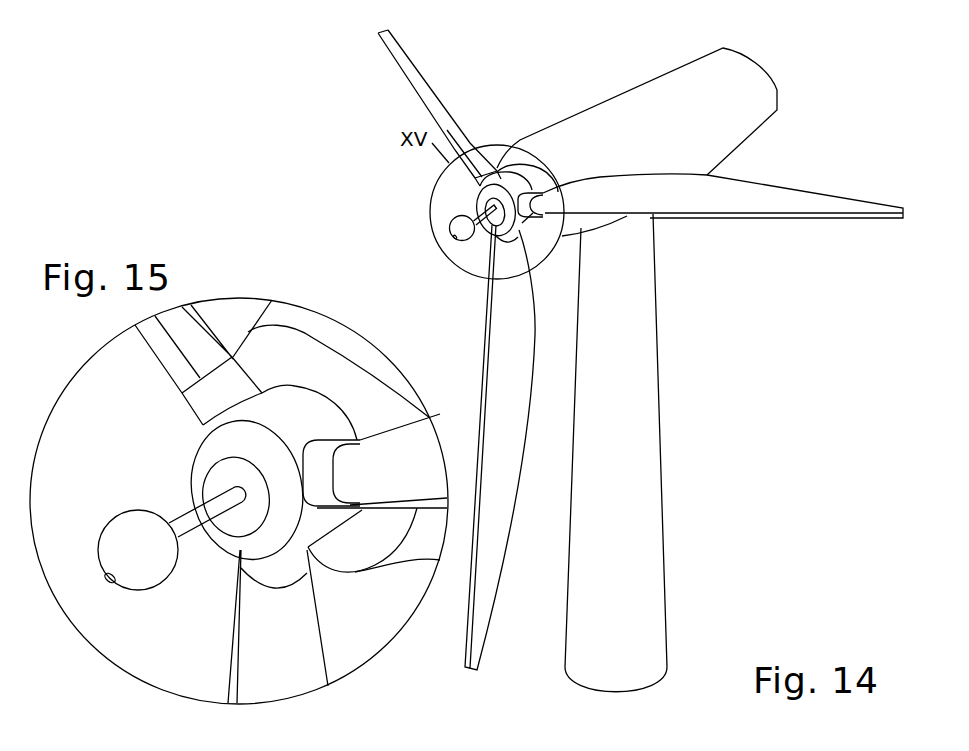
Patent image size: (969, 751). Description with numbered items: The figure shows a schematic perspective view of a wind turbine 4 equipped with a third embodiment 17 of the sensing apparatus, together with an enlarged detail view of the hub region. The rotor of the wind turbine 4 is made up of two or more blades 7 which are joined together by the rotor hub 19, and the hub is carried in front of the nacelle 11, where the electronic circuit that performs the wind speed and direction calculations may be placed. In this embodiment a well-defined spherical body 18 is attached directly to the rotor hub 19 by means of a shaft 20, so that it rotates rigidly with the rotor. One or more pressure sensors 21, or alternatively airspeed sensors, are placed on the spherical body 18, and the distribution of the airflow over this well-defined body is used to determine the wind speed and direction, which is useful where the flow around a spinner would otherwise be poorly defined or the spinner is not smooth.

In FIG. 14, the wind turbine 4 is at (740, 313).
In FIG. 14, the blades 7 is at (418, 67).
In FIG. 15, the blades 7 is at (157, 350).
In FIG. 14, the nacelle 11 is at (680, 65).
In FIG. 14, the third embodiment 17 is at (354, 141).
In FIG. 15, the third embodiment 17 is at (211, 280).
In FIG. 14, the spherical body 18 is at (447, 227).
In FIG. 15, the spherical body 18 is at (117, 514).
In FIG. 14, the rotor hub 19 is at (520, 228).
In FIG. 15, the rotor hub 19 is at (299, 432).
In FIG. 14, the shaft 20 is at (472, 211).
In FIG. 15, the shaft 20 is at (193, 510).
In FIG. 14, the pressure sensors 21 is at (455, 240).
In FIG. 15, the pressure sensors 21 is at (108, 583).